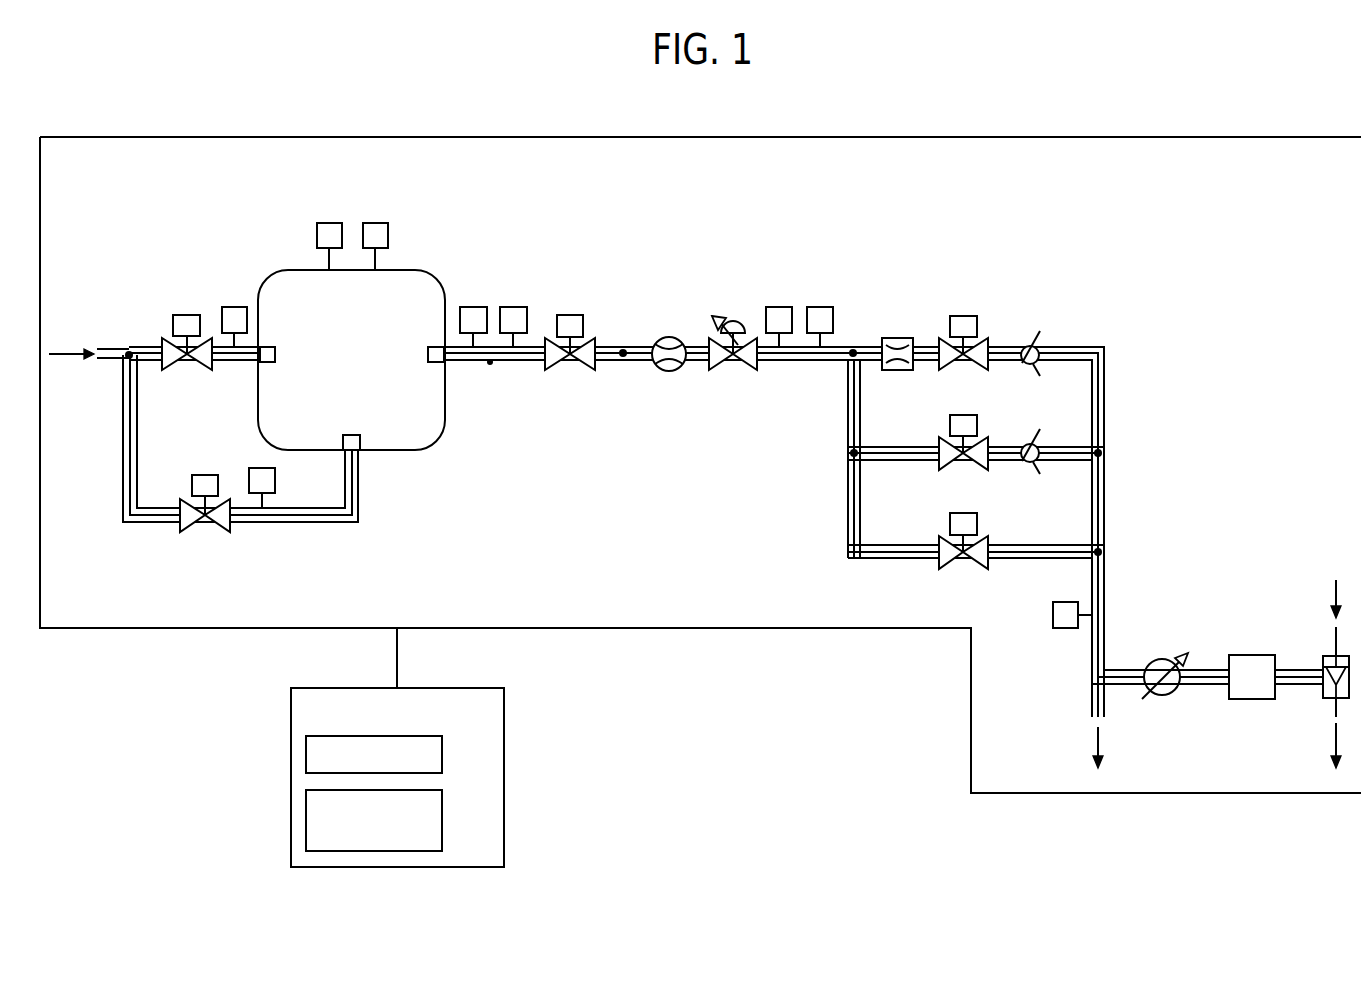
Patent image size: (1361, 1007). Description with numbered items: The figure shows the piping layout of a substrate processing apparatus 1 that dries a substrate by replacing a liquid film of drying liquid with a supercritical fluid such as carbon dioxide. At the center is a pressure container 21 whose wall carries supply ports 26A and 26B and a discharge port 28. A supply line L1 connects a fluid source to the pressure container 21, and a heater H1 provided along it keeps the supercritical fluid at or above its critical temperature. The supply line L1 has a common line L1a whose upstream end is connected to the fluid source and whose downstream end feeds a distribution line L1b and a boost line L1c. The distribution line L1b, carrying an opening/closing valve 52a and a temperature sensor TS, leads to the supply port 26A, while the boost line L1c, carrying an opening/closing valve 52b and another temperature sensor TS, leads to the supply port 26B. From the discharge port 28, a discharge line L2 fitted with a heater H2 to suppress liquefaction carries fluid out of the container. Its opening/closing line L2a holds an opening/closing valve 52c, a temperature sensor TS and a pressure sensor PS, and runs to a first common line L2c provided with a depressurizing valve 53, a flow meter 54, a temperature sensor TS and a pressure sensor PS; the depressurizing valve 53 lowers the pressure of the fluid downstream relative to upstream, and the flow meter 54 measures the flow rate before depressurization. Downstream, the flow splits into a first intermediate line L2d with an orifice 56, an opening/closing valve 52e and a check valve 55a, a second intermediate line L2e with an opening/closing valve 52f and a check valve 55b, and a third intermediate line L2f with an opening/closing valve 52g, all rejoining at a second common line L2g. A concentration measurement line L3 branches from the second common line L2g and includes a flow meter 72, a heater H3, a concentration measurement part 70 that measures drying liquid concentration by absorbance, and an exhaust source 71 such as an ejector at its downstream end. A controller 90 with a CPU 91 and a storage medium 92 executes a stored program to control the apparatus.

The substrate processing apparatus 1 is at (123, 81).
The pressure container 21 is at (297, 270).
The supply port 26A is at (277, 355).
The supply port 26B is at (351, 435).
The discharge port 28 is at (428, 355).
The opening/closing valve 52a is at (184, 315).
The opening/closing valve 52b is at (206, 475).
The opening/closing valve 52c is at (570, 315).
The opening/closing valve 52e is at (963, 316).
The opening/closing valve 52f is at (963, 415).
The opening/closing valve 52g is at (963, 513).
The depressurizing valve 53 is at (727, 316).
The flow meter 54 is at (668, 337).
The check valve 55a is at (1038, 333).
The check valve 55b is at (1026, 440).
The orifice 56 is at (897, 338).
The concentration measurement part 70 is at (1252, 655).
The exhaust source 71 is at (1320, 699).
The flow meter 72 is at (1160, 659).
The controller 90 is at (397, 764).
The central processing unit 91 is at (443, 755).
The storage medium 92 is at (443, 820).
The supply line L1 is at (200, 394).
The common line L1a is at (97, 356).
The distribution line L1b is at (148, 362).
The boost line L1c is at (137, 438).
The discharge line L2 is at (801, 557).
The opening/closing line L2a is at (536, 362).
The first common line L2c is at (642, 362).
The first intermediate line L2d is at (862, 365).
The second intermediate line L2e is at (896, 463).
The third intermediate line L2f is at (896, 562).
The second common line L2g is at (1107, 591).
The concentration measurement line L3 is at (1128, 687).
The heater H1 is at (144, 347).
The heater H2 is at (608, 362).
The heater H3 is at (1202, 687).
The pressure sensor PS is at (330, 223).
The temperature sensor TS is at (375, 223).